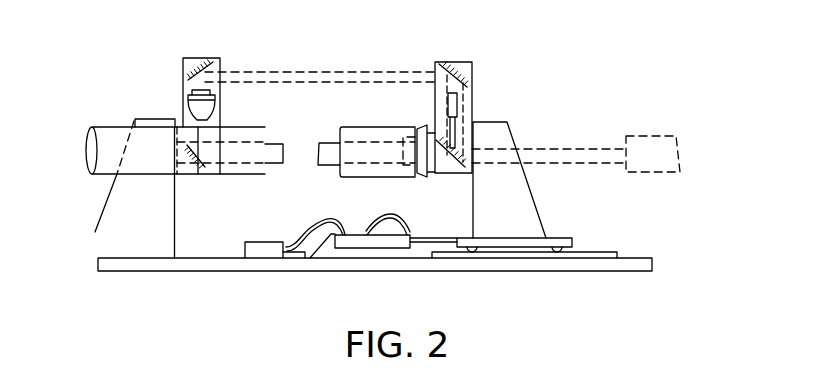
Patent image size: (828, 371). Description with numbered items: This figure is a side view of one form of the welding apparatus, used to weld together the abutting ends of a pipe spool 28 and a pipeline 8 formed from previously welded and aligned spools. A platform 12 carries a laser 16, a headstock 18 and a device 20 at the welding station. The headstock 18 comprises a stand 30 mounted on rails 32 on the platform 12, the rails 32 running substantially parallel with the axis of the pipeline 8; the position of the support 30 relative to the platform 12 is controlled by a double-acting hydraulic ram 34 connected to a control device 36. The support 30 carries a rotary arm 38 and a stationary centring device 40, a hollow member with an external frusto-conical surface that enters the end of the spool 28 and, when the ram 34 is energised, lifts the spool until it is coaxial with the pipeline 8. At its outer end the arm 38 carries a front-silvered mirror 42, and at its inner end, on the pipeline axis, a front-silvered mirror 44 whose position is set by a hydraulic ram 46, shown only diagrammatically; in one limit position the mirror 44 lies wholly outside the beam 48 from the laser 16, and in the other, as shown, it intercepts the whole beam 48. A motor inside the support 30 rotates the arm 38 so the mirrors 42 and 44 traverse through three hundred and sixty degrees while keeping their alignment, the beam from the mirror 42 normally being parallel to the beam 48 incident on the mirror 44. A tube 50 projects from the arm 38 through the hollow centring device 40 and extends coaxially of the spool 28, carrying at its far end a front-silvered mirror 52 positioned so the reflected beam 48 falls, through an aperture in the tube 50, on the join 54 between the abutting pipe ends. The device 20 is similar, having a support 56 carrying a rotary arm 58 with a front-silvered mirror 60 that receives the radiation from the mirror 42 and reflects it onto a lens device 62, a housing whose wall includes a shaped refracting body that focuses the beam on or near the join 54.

The pipeline 8 is at (103, 134).
The platform 12 is at (640, 262).
The laser 16 is at (649, 142).
The headstock 18 is at (535, 145).
The device at the welding station 20 is at (152, 117).
The pipe spool 28 is at (362, 135).
The stand 30 is at (528, 223).
The rails 32 is at (590, 255).
The double-acting hydraulic ram 34 is at (367, 245).
The control device 36 is at (265, 250).
The rotary arm 38 is at (507, 122).
The centring device 40 is at (422, 130).
The front-silvered mirror 42 is at (443, 61).
The front-silvered mirror 44 is at (451, 137).
The hydraulic ram 46 is at (457, 106).
The laser beam 48 is at (549, 135).
The tube 50 is at (330, 148).
The front-silvered mirror 52 is at (190, 170).
The join 54 is at (200, 136).
The support 56 is at (140, 242).
The rotary arm 58 is at (185, 58).
The front-silvered mirror 60 is at (207, 64).
The lens device 62 is at (213, 99).